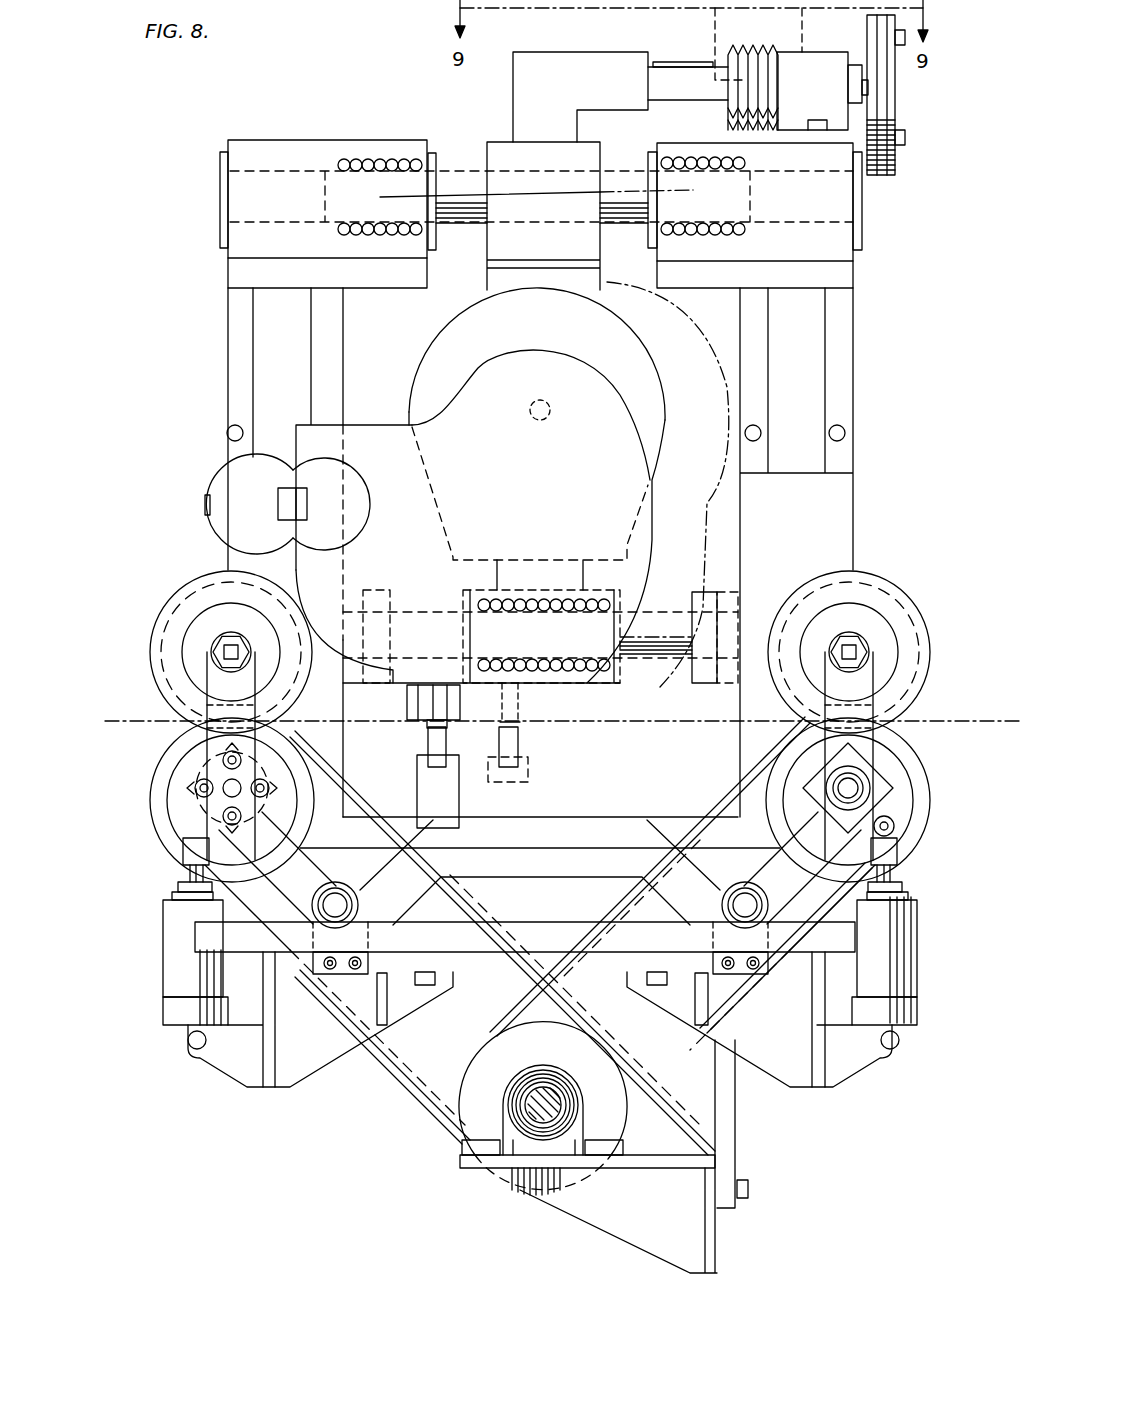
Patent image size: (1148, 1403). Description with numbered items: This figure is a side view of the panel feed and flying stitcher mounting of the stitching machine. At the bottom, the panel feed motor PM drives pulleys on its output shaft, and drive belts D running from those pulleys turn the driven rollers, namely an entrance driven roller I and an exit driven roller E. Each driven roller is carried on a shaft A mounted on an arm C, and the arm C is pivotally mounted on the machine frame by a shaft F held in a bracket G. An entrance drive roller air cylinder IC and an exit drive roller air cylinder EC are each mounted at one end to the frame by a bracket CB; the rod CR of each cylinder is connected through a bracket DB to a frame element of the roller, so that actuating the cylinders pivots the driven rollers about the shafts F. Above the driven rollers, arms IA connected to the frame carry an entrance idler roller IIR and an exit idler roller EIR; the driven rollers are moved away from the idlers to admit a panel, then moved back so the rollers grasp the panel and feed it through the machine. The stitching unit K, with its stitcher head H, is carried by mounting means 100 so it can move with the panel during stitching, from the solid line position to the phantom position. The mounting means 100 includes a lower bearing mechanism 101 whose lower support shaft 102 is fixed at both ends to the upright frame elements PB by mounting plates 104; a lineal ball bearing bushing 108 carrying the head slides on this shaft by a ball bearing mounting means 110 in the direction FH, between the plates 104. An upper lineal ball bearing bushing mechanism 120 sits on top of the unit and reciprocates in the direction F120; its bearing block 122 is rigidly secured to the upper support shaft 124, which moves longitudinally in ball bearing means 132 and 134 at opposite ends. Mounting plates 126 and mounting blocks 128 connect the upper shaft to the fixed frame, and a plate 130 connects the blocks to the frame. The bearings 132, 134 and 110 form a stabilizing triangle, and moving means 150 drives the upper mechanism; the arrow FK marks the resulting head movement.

The mounting means 100 is at (330, 128).
The lower bearing mechanism 101 is at (600, 692).
The lower support shaft 102 is at (657, 645).
The mounting plates 104 is at (366, 590).
The lineal ball bearing bushing 108 is at (569, 682).
The ball bearing mounting means 110 is at (525, 614).
The upper lineal ball bearing bushing mechanism 120 is at (497, 135).
The bearing block 122 is at (502, 156).
The upper support shaft 124 is at (455, 217).
The mounting plates 126 is at (433, 152).
The mounting blocks 128 is at (258, 232).
The plate 130 is at (246, 275).
The ball bearing means 132 is at (332, 234).
The ball bearing means 134 is at (747, 160).
The moving means 150 is at (632, 45).
The direction of movement of upper bearing mechanism F120 is at (632, 199).
The stitching unit K is at (422, 355).
The cam force FK is at (700, 530).
The upright frame elements PB is at (840, 404).
The stitcher head H is at (410, 724).
The direction of bearing movement FH is at (490, 742).
The entrance idler roller IIR is at (172, 602).
The exit idler roller EIR is at (880, 590).
The arms IA is at (213, 682).
The entrance driven roller I is at (160, 810).
The shaft A is at (230, 787).
The exit driven roller E is at (920, 822).
The bracket DB is at (898, 802).
The arm C is at (327, 866).
The shaft F is at (350, 903).
The bracket G is at (337, 972).
The rod CR is at (190, 872).
The entrance drive roller air cylinder IC is at (175, 965).
The exit drive roller air cylinder EC is at (910, 973).
The bracket CB is at (233, 1063).
The drive belts D is at (393, 1070).
The panel feed motor PM is at (477, 1118).